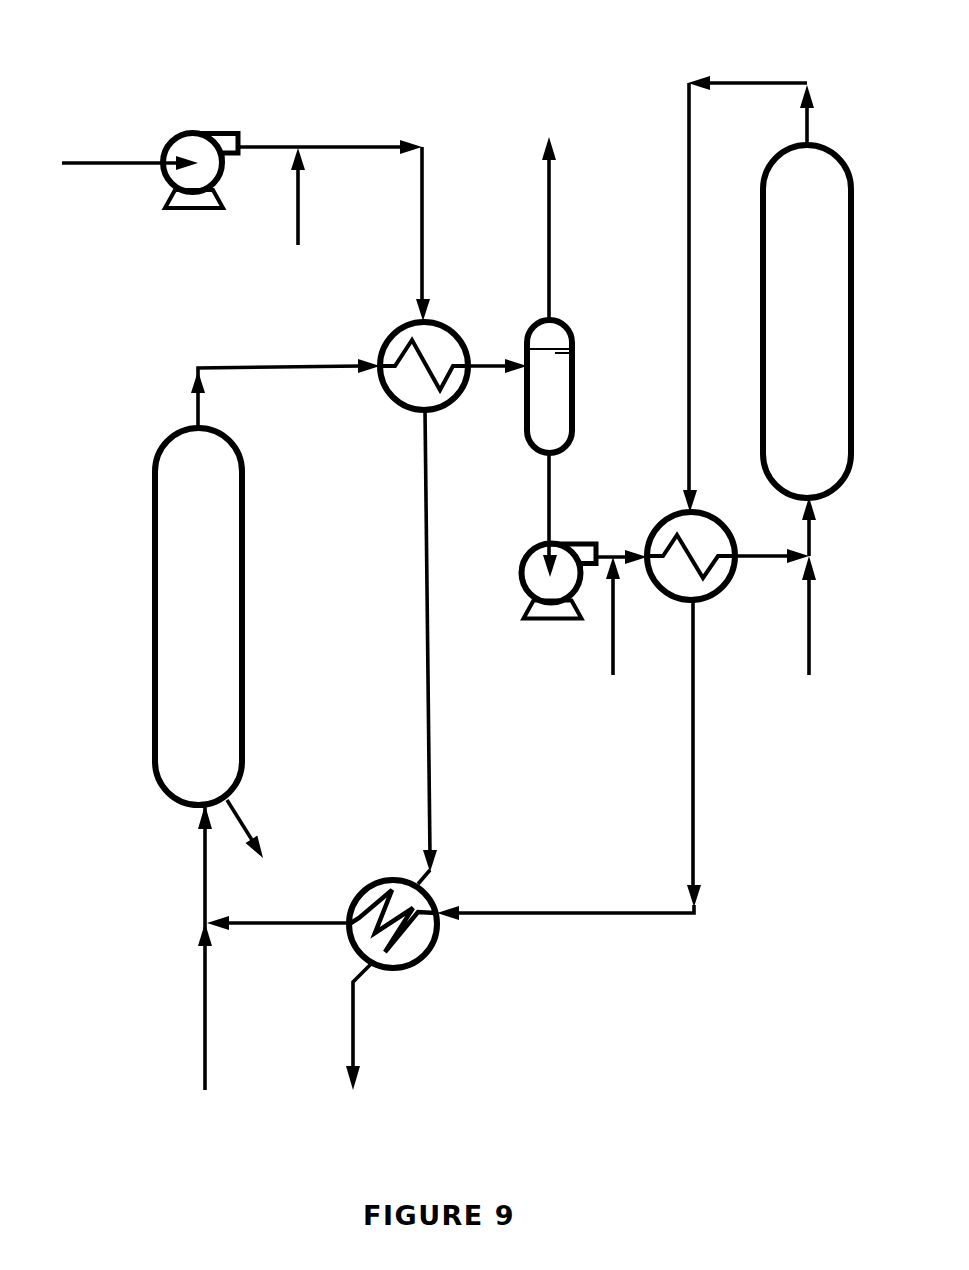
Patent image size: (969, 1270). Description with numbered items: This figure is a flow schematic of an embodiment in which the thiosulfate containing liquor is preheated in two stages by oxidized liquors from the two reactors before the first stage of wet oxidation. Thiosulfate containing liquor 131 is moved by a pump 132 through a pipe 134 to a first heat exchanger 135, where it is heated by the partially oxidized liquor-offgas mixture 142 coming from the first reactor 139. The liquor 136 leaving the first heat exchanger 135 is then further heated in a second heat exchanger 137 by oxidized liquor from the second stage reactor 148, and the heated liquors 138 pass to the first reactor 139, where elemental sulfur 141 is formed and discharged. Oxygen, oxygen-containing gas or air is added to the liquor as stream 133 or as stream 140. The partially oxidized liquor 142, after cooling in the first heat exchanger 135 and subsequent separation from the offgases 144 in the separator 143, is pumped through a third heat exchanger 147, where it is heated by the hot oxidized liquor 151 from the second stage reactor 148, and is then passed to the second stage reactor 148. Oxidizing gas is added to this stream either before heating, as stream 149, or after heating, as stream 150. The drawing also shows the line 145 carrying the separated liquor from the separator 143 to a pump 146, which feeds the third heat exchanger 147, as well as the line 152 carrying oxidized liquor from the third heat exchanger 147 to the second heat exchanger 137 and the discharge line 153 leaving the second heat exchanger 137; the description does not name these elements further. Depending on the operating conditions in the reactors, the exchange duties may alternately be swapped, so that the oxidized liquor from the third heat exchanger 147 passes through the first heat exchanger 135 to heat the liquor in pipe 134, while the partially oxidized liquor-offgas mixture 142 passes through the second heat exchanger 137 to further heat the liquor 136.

The thiosulfate containing liquor 131 is at (88, 163).
The pump 132 is at (193, 150).
The oxidizing gas stream 133 is at (298, 227).
The pipe 134 is at (357, 147).
The first heat exchanger 135 is at (440, 345).
The liquor 136 is at (431, 672).
The second heat exchanger 137 is at (412, 896).
The heated liquors 138 is at (253, 923).
The first reactor 139 is at (218, 478).
The oxidizing gas stream 140 is at (205, 1022).
The elemental sulfur 141 is at (243, 820).
The partially oxidized liquor-offgas mixture 142 is at (257, 368).
The separator 143 is at (553, 340).
The offgases 144 is at (549, 197).
The line 145 is at (552, 492).
The pump 146 is at (538, 570).
The third heat exchanger 147 is at (710, 540).
The second stage reactor 148 is at (805, 168).
The oxidizing gas stream 149 is at (613, 652).
The oxidizing gas stream 150 is at (809, 652).
The hot oxidized liquor 151 is at (755, 83).
The line 152 is at (555, 913).
The outlet line 153 is at (353, 1022).